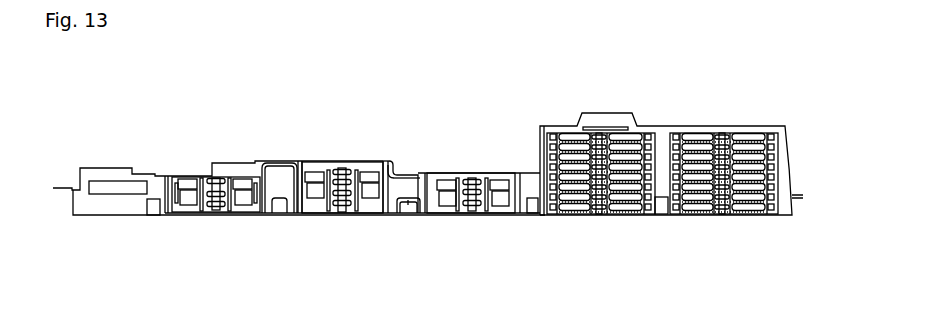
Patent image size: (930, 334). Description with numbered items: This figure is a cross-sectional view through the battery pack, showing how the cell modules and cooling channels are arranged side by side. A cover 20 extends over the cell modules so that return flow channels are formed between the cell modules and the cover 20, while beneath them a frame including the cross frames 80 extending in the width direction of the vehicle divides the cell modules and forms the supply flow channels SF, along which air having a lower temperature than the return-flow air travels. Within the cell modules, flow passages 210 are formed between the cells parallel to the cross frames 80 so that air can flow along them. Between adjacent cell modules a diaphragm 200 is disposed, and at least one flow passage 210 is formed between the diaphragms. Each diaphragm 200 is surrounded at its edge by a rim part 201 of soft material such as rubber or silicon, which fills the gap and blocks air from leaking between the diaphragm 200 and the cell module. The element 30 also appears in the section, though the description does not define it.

The cover 20 is at (316, 161).
The rim part 201 is at (394, 158).
The diaphragm 200 is at (429, 190).
The flow passage 210 is at (341, 211).
The cross frame 80 is at (393, 212).
The supply flow channel SF is at (409, 206).
The housing 30 is at (761, 217).